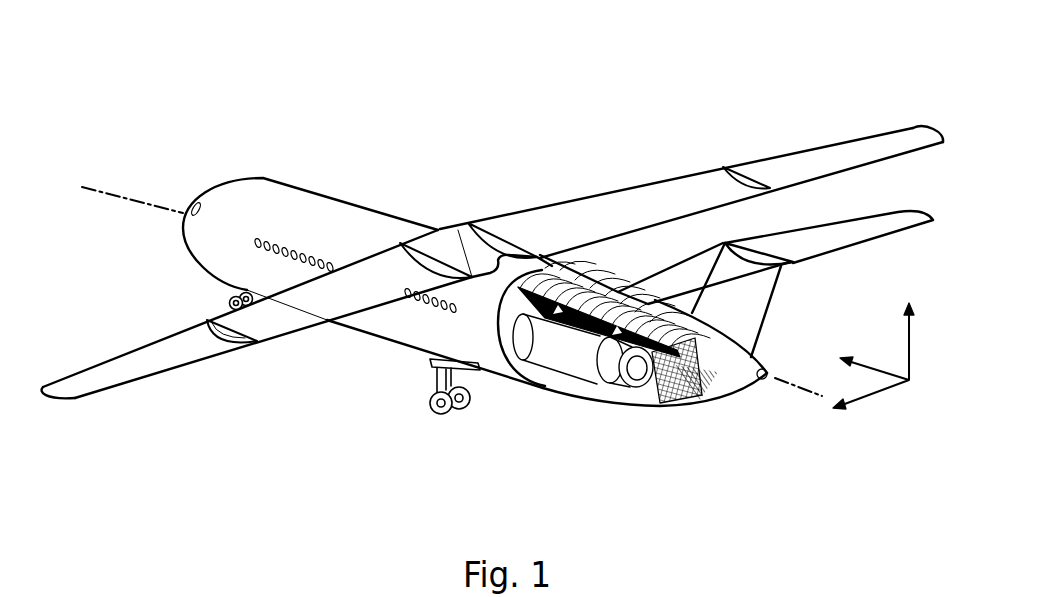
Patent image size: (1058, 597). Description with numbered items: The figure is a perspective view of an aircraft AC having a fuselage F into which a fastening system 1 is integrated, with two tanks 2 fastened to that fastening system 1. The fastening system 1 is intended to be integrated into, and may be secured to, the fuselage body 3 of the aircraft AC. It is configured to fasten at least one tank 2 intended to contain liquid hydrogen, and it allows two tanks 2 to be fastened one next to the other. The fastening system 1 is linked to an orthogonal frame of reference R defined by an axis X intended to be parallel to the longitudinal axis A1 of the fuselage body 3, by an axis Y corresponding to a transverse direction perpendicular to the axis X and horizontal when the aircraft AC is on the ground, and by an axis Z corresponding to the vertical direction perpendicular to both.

The aircraft AC is at (540, 98).
The longitudinal axis A1 is at (150, 203).
The fuselage F is at (410, 212).
The orthogonal frame of reference R is at (922, 394).
The fastening system 1 is at (676, 425).
The tank 2 is at (573, 353).
The fuselage body 3 is at (600, 438).